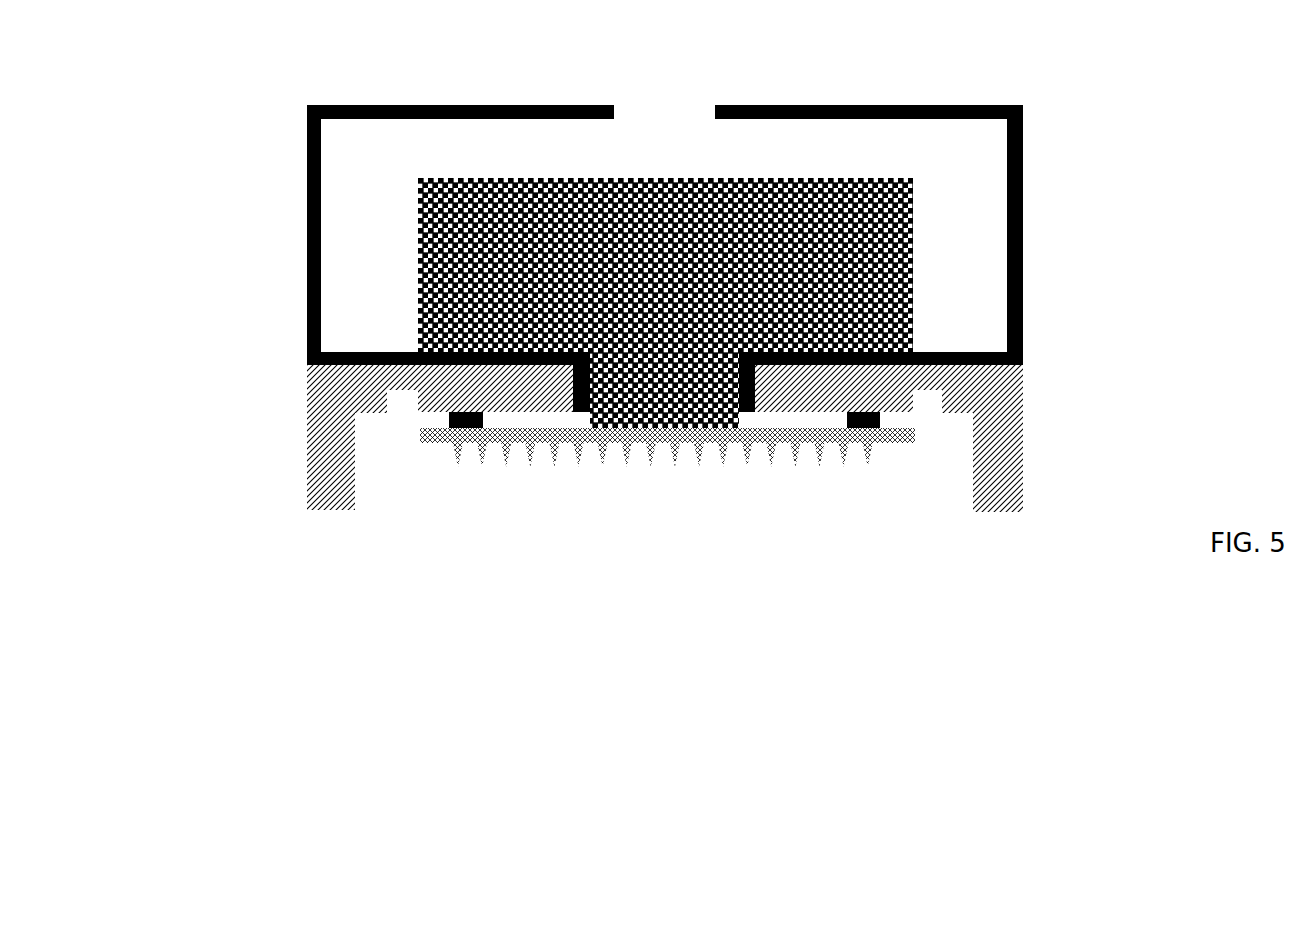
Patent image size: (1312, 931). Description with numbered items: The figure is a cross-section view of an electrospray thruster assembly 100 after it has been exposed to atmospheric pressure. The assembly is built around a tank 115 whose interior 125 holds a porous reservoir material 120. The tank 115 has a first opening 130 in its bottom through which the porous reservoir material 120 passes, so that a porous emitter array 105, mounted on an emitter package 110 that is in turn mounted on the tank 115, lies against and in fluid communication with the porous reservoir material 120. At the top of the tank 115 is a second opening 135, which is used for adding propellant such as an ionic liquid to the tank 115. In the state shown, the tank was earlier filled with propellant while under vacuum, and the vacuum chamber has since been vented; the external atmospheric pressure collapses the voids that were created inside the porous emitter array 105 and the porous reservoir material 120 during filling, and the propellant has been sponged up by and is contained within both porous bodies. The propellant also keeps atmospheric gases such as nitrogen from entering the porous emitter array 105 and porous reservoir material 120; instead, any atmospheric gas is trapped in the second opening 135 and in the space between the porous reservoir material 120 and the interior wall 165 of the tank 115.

The electrospray thruster assembly 100 is at (571, 533).
The porous emitter array 105 is at (425, 435).
The emitter package 110 is at (313, 382).
The tank 115 is at (308, 152).
The porous reservoir material 120 is at (912, 263).
The interior 125 is at (393, 168).
The first opening 130 is at (760, 422).
The second opening 135 is at (687, 106).
The interior wall 165 is at (580, 118).